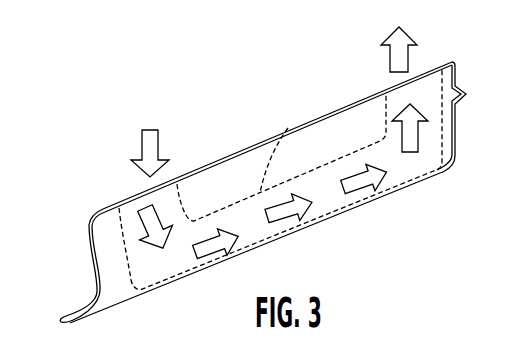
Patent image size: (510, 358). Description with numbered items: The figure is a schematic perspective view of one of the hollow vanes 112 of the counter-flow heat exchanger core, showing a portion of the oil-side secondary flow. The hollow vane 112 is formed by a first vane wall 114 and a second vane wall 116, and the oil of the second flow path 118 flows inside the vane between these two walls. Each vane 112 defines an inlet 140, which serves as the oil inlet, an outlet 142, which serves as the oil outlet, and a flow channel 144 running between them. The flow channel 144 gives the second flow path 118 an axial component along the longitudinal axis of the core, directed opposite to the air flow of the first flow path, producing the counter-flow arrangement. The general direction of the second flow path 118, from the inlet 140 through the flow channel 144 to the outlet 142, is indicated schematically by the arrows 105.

The arrows 105 is at (145, 130).
The hollow vane 112 is at (254, 184).
The first vane wall 114 is at (84, 244).
The second vane wall 116 is at (102, 258).
The second flow path 118 is at (166, 176).
The inlet 140 is at (140, 193).
The outlet 142 is at (431, 66).
The flow channel 144 is at (288, 128).